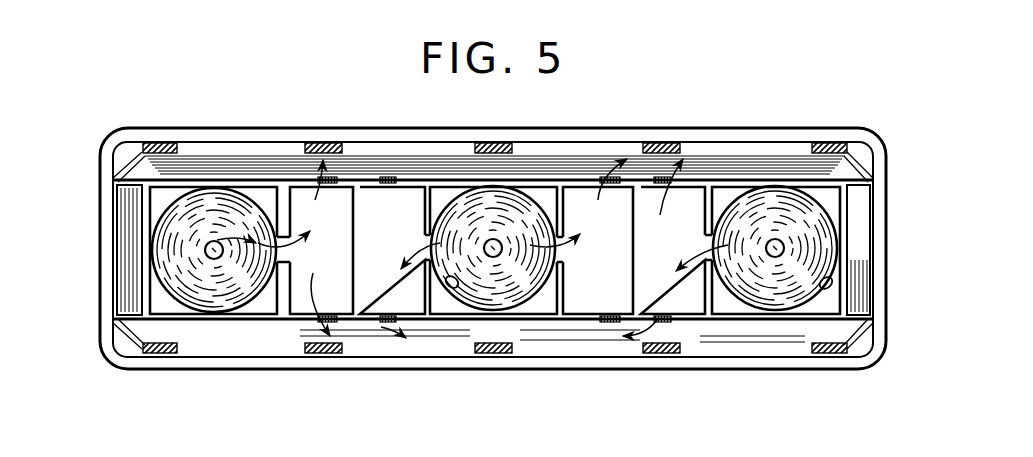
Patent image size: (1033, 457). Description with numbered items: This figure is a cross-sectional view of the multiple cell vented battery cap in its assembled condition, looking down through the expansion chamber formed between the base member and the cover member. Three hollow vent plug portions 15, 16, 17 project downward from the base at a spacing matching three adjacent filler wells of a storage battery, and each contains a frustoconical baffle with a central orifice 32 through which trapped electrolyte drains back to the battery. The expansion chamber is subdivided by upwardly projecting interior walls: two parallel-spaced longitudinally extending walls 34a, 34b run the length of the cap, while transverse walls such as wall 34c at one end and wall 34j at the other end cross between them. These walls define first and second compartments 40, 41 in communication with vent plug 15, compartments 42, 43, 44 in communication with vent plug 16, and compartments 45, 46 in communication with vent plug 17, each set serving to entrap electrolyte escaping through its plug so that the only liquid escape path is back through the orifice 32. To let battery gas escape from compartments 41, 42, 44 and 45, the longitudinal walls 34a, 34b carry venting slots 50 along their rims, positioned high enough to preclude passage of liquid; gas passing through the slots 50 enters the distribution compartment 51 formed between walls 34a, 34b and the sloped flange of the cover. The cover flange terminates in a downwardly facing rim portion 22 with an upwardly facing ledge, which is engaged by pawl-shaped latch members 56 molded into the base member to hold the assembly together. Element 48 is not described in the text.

The vent plug portion 15 is at (172, 221).
The vent plug portion 16 is at (460, 287).
The vent plug portion 17 is at (830, 283).
The rim portion 22 is at (737, 358).
The orifice 32 is at (222, 257).
The longitudinally extending interior wall 34a is at (237, 320).
The longitudinally extending interior wall 34b is at (460, 198).
The transversely extending interior wall 34c is at (147, 277).
The transversely extending interior wall 34j is at (840, 222).
The first compartment 40 is at (265, 196).
The second compartment 41 is at (303, 196).
The compartment 42 is at (390, 202).
The compartment 43 is at (542, 196).
The compartment 44 is at (578, 200).
The compartment 45 is at (687, 203).
The compartment 46 is at (725, 195).
The end panel interior 48 is at (857, 268).
The venting slots 50 is at (326, 184).
The distribution compartment 51 is at (230, 165).
The latch members 56 is at (160, 142).